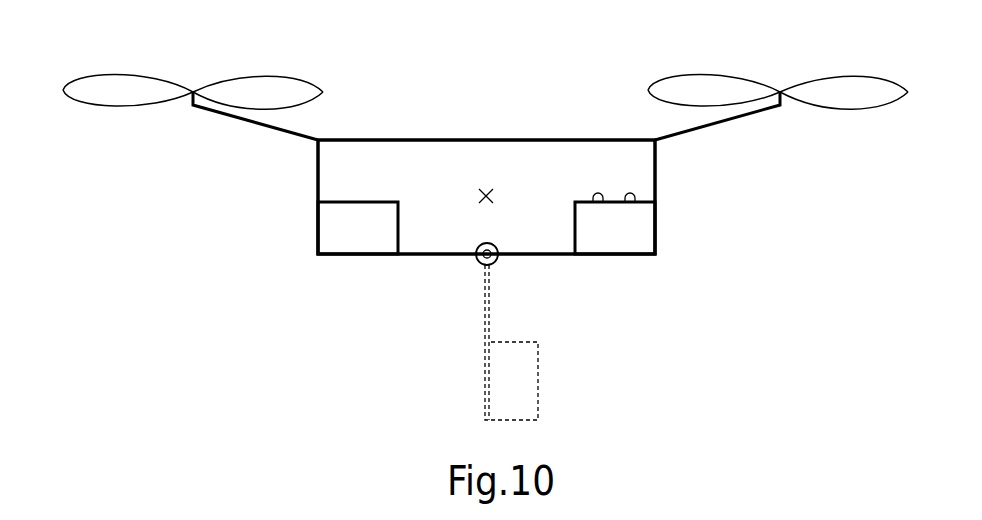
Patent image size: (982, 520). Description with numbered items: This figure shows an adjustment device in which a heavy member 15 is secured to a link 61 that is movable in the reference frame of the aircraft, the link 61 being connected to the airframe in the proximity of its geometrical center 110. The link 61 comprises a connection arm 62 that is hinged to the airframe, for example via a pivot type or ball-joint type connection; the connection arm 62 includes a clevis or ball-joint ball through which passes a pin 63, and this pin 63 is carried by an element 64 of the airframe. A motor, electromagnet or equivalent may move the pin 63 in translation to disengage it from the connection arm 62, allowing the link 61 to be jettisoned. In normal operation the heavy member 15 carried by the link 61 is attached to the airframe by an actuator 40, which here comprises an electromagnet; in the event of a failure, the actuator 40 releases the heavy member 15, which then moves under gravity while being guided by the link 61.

The heavy member 15 is at (341, 238).
The actuator 40 is at (631, 196).
The link 61 is at (525, 250).
The connection arm 62 is at (525, 250).
The pin 63 is at (476, 264).
The element of the airframe 64 is at (478, 246).
The geometrical center 110 is at (484, 190).